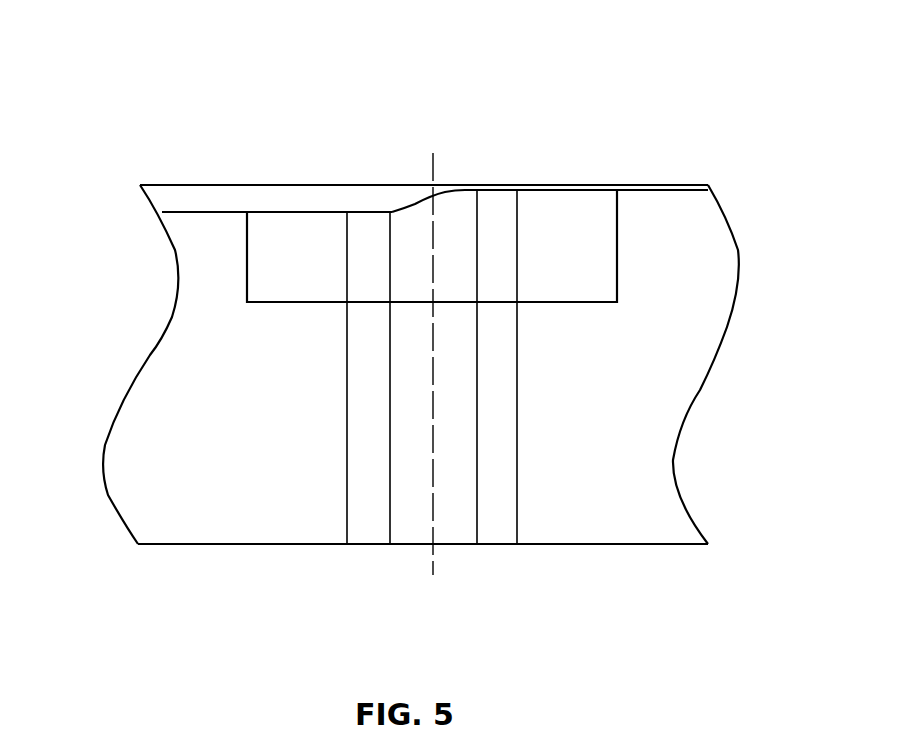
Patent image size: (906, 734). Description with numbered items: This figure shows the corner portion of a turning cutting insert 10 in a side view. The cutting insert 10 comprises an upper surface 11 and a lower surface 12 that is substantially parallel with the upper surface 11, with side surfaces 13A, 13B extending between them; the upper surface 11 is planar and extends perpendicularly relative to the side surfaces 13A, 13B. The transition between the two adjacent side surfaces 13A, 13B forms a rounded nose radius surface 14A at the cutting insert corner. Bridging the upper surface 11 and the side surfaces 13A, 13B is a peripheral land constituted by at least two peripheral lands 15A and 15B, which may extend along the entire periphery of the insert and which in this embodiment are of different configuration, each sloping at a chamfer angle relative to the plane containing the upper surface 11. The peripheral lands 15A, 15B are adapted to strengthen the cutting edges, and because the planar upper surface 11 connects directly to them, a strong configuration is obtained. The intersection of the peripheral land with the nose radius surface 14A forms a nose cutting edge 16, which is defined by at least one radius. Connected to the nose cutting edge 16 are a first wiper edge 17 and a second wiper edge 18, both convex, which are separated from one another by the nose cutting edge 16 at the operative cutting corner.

The turning cutting insert 10 is at (260, 120).
The upper surface 11 is at (388, 193).
The lower surface 12 is at (592, 545).
The side surface 13A is at (630, 388).
The side surface 13B is at (163, 372).
The nose radius surface 14A is at (408, 502).
The peripheral land 15A is at (557, 185).
The peripheral land 15B is at (300, 197).
The nose cutting edge 16 is at (413, 205).
The first wiper edge 17 is at (355, 211).
The second wiper edge 18 is at (493, 191).